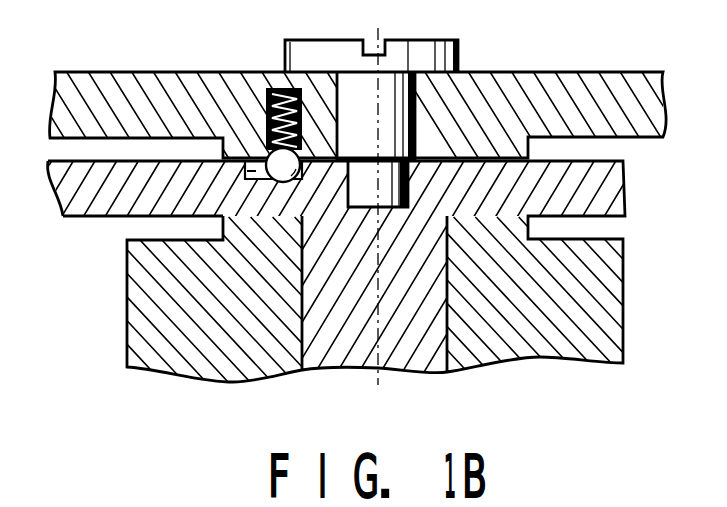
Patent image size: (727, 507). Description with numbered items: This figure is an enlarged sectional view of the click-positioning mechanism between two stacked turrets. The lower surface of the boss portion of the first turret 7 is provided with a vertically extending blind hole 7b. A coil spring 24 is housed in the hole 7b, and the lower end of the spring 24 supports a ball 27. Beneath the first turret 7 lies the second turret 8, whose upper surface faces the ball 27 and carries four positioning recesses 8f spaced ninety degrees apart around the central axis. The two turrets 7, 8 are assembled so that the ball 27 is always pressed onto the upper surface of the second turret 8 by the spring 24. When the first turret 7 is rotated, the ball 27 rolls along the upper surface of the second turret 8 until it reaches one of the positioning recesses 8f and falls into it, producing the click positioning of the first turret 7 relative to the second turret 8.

The first turret 7 is at (582, 92).
The blind hole 7b is at (245, 84).
The coil spring 24 is at (267, 88).
The ball 27 is at (266, 158).
The second turret 8 is at (363, 273).
The positioning recess 8f is at (198, 218).